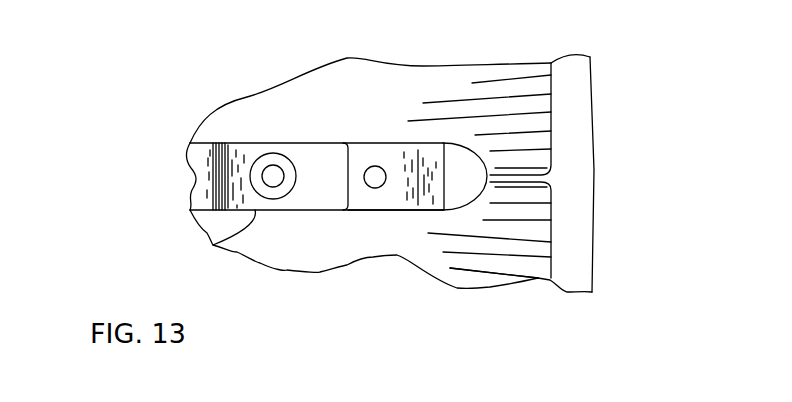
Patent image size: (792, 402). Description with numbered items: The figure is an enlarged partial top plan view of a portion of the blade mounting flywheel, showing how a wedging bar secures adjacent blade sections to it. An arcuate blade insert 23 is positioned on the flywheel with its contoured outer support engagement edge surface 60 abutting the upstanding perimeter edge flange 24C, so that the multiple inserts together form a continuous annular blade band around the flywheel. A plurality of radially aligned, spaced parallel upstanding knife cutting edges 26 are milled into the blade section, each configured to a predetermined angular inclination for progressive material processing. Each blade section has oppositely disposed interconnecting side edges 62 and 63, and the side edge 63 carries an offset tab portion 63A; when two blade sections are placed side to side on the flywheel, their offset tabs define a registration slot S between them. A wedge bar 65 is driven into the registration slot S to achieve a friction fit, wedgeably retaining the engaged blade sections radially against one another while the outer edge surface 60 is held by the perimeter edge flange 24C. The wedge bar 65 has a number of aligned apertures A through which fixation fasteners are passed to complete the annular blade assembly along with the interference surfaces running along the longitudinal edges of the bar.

The registration slot S is at (243, 143).
The aperture A is at (284, 156).
The outer support engagement edge surface 60 is at (553, 81).
The upstanding perimeter edge flange 24C is at (595, 90).
The side edge 63 is at (390, 154).
The offset tab portion 63A is at (552, 142).
The wedge bar 65 is at (213, 245).
The arcuate blade insert 23 is at (538, 249).
The knife cutting edge 26 is at (478, 270).
The side edge 62 is at (391, 205).